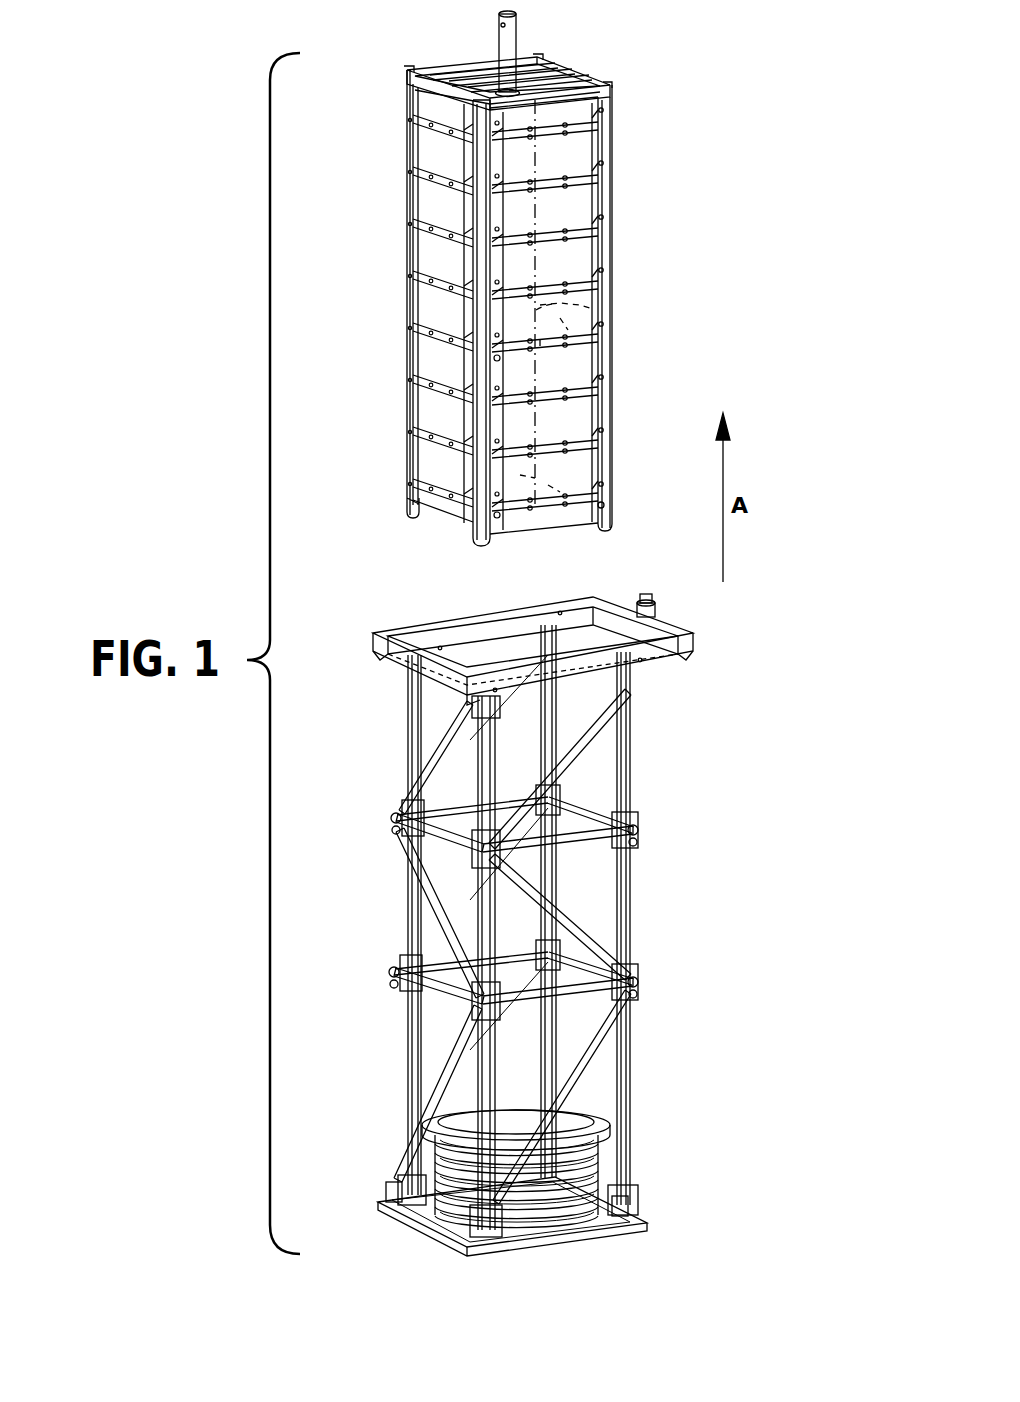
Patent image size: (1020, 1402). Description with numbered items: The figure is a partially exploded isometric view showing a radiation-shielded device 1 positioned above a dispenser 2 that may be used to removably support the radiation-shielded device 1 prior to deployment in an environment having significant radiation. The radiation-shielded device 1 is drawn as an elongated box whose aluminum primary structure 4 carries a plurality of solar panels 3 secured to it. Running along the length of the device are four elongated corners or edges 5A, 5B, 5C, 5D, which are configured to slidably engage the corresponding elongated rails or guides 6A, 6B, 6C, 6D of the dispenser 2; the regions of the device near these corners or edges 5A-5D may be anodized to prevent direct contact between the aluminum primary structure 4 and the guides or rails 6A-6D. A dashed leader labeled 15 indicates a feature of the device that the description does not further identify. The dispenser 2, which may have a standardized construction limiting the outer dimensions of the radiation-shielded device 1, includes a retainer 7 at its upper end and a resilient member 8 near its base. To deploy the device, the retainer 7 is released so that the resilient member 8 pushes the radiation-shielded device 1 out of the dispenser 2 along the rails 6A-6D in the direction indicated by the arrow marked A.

The radiation-shielded device 1 is at (614, 232).
The dispenser 2 is at (686, 619).
The solar panels 3 is at (613, 190).
The primary structure 4 is at (613, 135).
The elongated corner or edge 5A is at (407, 262).
The elongated corner or edge 5B is at (478, 540).
The elongated corner or edge 5C is at (613, 425).
The elongated corner or edge 5D is at (613, 312).
The internal member 15 is at (613, 340).
The elongated rail or guide 6A is at (410, 722).
The elongated rail or guide 6B is at (478, 780).
The elongated rail or guide 6C is at (620, 788).
The elongated rail or guide 6D is at (557, 877).
The retainer 7 is at (504, 604).
The resilient member 8 is at (598, 1165).